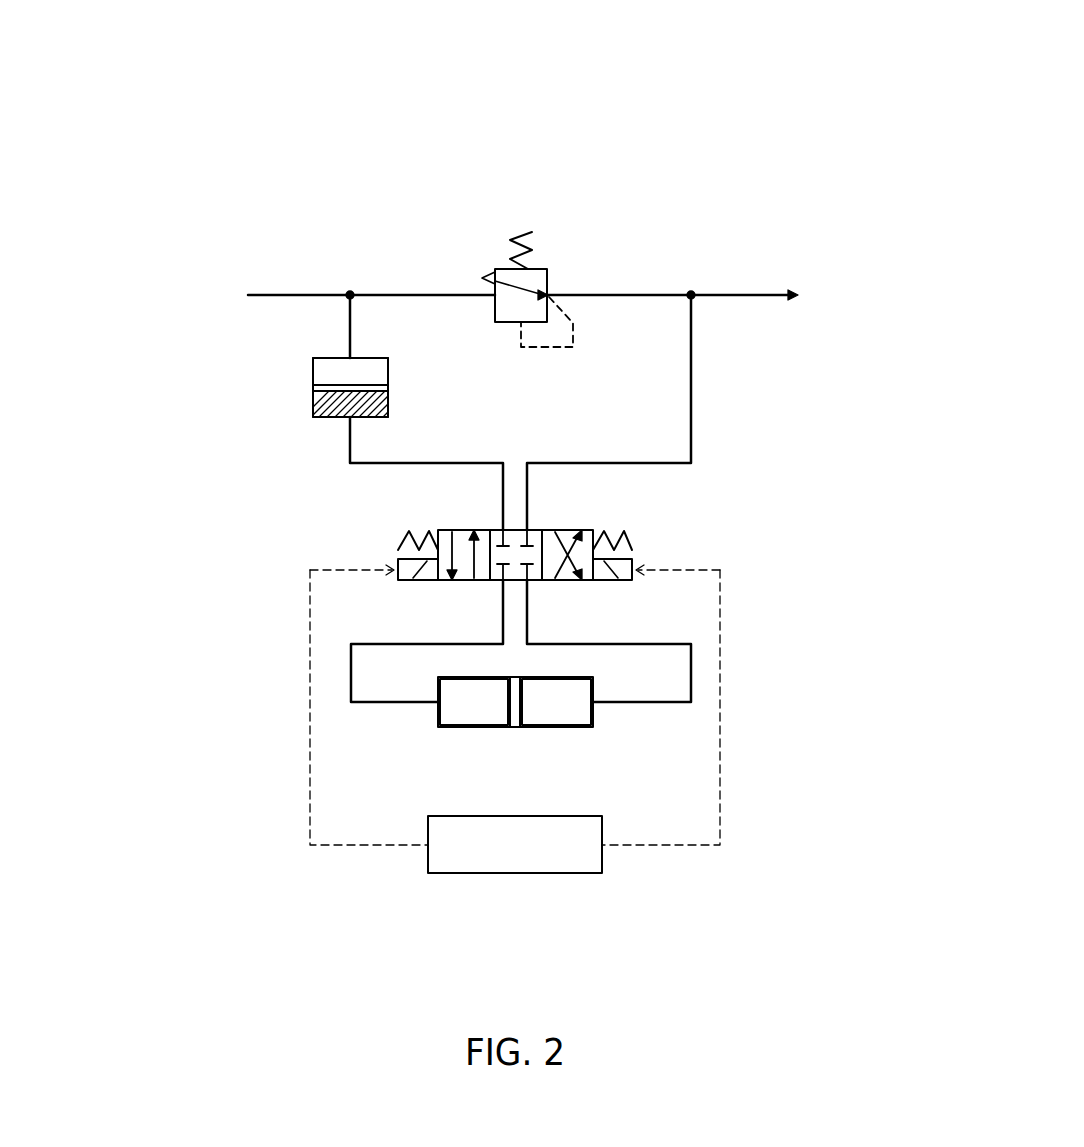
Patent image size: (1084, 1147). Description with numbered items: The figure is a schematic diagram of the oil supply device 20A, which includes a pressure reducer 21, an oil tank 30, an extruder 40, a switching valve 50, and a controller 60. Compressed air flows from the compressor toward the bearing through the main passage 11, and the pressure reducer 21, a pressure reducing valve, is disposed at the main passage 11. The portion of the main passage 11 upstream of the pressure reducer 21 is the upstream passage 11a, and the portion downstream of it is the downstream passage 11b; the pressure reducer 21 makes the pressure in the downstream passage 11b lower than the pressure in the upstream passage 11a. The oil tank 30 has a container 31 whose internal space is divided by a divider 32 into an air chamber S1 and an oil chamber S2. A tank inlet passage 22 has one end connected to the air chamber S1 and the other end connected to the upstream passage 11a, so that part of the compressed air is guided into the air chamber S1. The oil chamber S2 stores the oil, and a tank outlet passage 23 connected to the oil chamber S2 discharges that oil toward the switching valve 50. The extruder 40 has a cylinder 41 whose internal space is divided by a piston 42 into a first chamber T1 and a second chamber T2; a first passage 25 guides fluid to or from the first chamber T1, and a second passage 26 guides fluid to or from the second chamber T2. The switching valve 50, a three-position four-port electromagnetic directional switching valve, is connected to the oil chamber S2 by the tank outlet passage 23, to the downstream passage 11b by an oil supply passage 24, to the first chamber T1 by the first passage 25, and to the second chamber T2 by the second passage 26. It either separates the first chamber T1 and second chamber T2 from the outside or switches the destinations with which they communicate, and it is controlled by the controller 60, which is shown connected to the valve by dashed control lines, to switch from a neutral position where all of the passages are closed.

The oil supply device 20A is at (628, 140).
The main passage 11 is at (745, 295).
The upstream passage 11a is at (387, 295).
The downstream passage 11b is at (638, 295).
The pressure reducer 21 is at (540, 269).
The tank inlet passage 22 is at (350, 328).
The tank outlet passage 23 is at (375, 463).
The oil supply passage 24 is at (691, 388).
The first passage 25 is at (410, 643).
The second passage 26 is at (618, 643).
The oil tank 30 is at (302, 372).
The container 31 is at (367, 358).
The divider 32 is at (310, 387).
The air chamber S1 is at (373, 373).
The oil chamber S2 is at (383, 400).
The extruder 40 is at (600, 736).
The cylinder 41 is at (593, 688).
The piston 42 is at (515, 727).
The first chamber T1 is at (462, 727).
The second chamber T2 is at (553, 727).
The switching valve 50 is at (565, 527).
The controller 60 is at (514, 873).